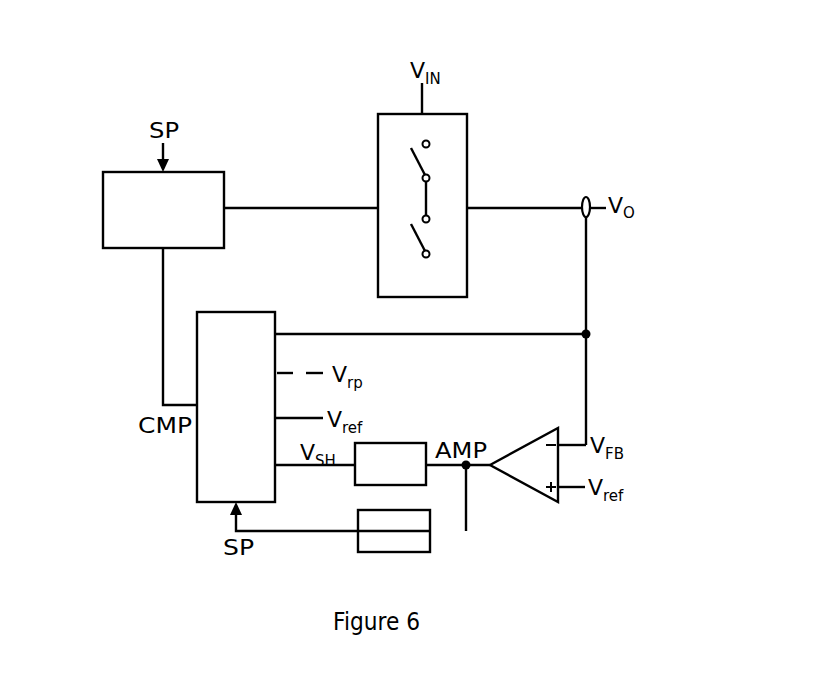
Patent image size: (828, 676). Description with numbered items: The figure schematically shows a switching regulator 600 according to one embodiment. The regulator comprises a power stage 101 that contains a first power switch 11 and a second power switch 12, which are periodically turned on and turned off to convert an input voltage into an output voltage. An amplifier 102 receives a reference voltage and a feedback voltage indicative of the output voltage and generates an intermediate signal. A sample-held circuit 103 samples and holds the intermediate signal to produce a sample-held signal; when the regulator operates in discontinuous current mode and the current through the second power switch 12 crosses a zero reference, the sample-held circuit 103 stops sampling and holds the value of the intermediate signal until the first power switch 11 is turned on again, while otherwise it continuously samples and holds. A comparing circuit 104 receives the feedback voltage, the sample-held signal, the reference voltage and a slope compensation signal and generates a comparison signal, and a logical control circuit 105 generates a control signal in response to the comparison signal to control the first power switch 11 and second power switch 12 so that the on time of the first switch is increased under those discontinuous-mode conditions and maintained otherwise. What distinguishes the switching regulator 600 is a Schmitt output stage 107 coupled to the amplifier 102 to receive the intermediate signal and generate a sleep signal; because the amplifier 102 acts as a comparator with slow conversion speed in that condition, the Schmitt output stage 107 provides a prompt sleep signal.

The switching regulator 600 is at (583, 110).
The power stage 101 is at (373, 150).
The first power switch 11 is at (409, 179).
The second power switch 12 is at (409, 237).
The amplifier 102 is at (524, 465).
The sample-held circuit 103 is at (390, 464).
The comparing circuit 104 is at (236, 407).
The logical control circuit 105 is at (163, 210).
The Schmitt output stage 107 is at (394, 531).